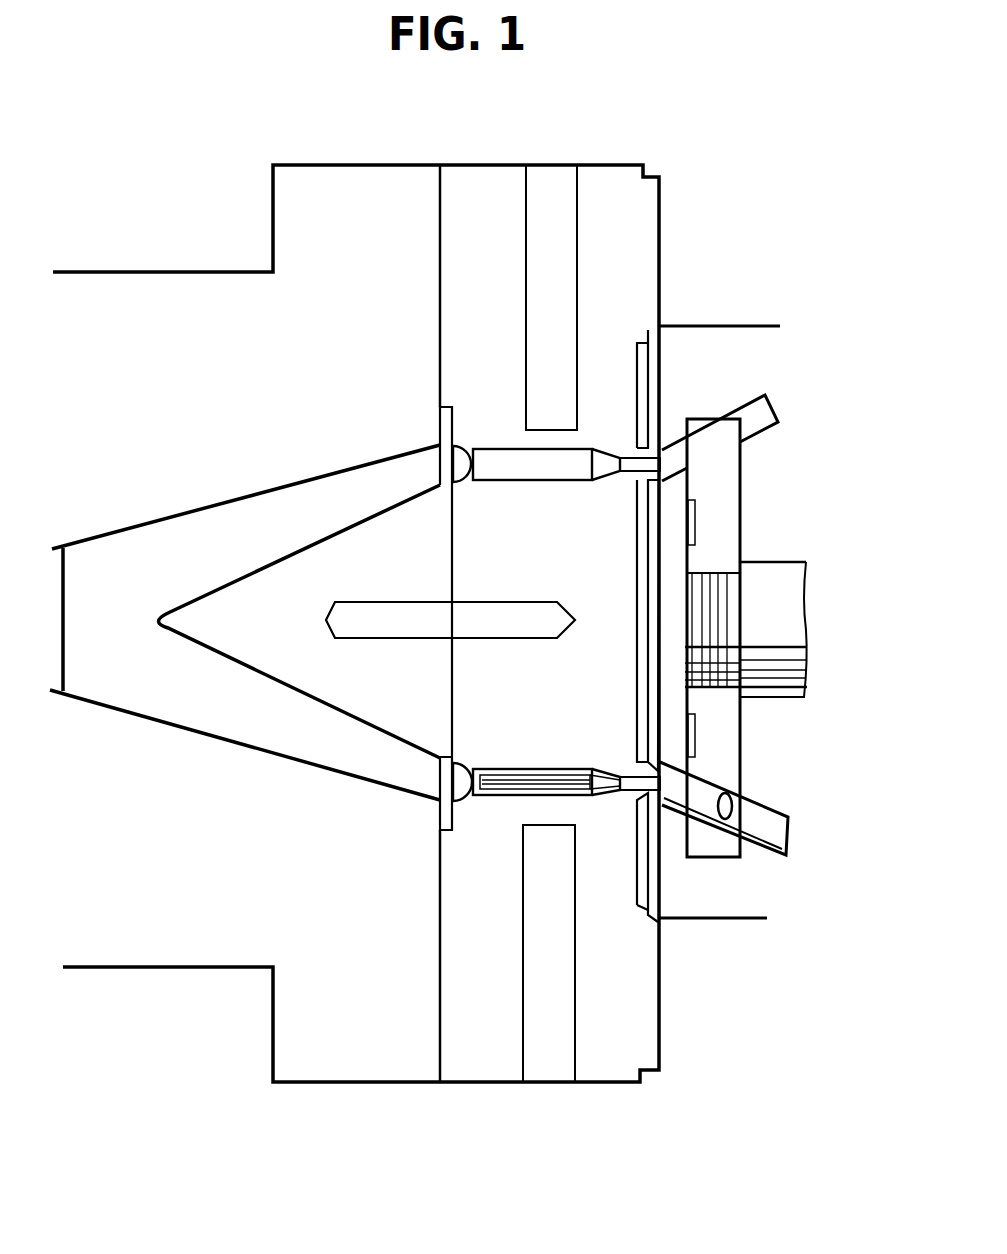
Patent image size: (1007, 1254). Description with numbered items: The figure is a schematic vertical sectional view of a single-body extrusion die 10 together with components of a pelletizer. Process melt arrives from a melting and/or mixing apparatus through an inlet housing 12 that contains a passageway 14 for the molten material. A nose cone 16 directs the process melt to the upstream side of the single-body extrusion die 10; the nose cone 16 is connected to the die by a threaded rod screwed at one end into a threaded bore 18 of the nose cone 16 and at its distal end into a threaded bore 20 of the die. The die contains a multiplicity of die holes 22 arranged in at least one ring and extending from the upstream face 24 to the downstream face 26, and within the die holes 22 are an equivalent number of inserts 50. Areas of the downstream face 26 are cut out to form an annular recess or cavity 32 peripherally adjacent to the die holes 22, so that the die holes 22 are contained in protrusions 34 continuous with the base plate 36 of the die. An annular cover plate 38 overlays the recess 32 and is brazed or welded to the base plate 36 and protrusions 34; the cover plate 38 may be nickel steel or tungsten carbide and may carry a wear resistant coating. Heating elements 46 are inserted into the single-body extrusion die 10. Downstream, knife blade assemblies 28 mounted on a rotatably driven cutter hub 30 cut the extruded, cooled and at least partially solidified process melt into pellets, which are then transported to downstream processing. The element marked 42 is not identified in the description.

The single-body extrusion die 10 is at (700, 164).
The inlet housing 12 is at (356, 623).
The passageway 14 is at (245, 606).
The nose cone 16 is at (251, 634).
The threaded bore 18 is at (365, 498).
The threaded bore 20 is at (470, 498).
The die holes 22 is at (536, 623).
The upstream face 24 is at (381, 623).
The downstream face 26 is at (725, 409).
The knife blade assemblies 28 is at (738, 791).
The cutter hub 30 is at (748, 638).
The annular recess or cavity 32 is at (677, 333).
The protrusions 34 is at (610, 506).
The base plate 36 is at (416, 623).
The annular cover plate 38 is at (708, 622).
The lower contact 42 is at (607, 805).
The heating elements 46 is at (514, 623).
The inserts 50 is at (519, 827).